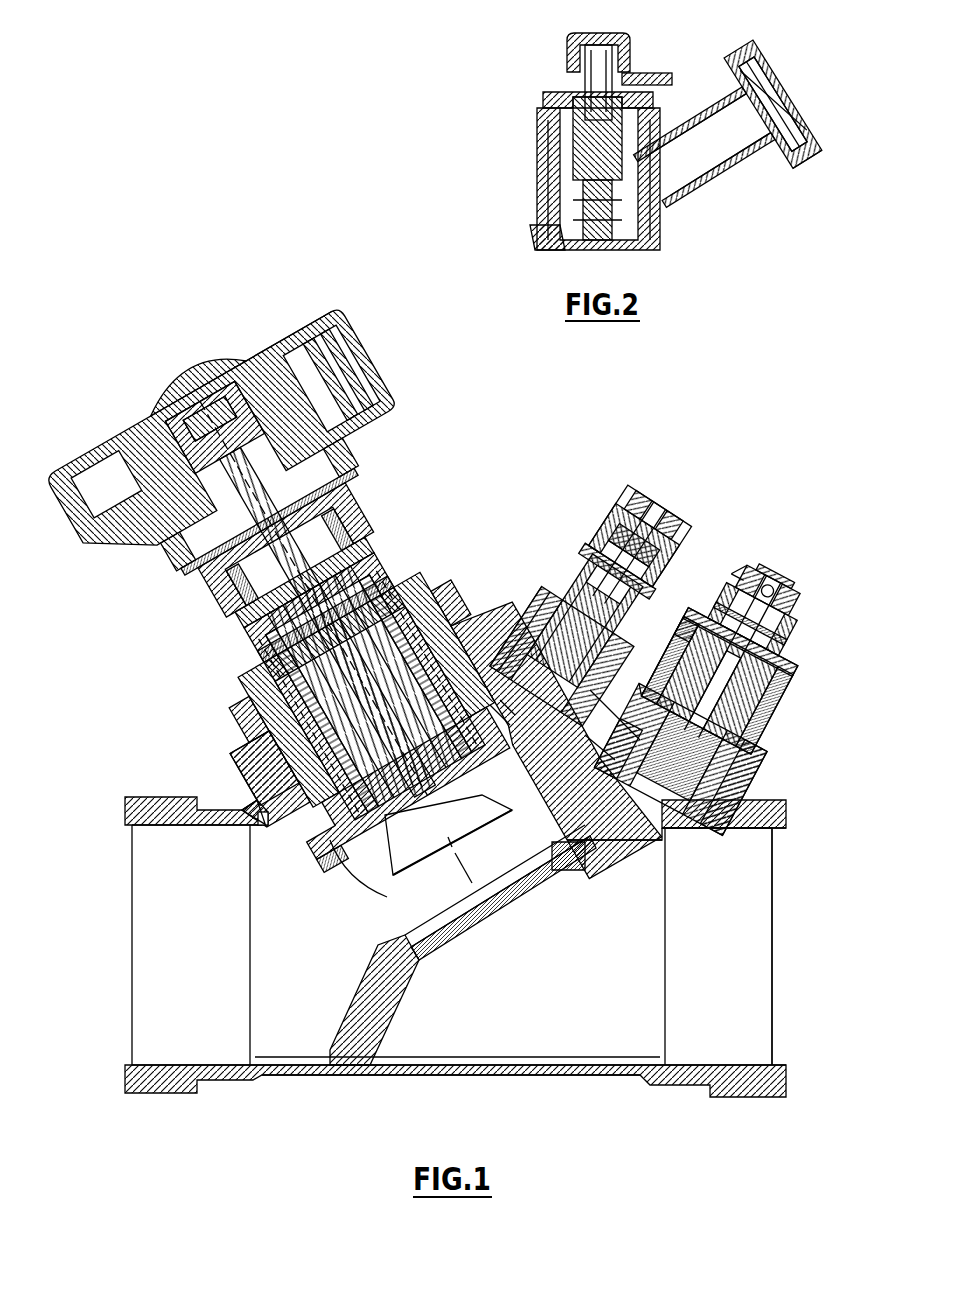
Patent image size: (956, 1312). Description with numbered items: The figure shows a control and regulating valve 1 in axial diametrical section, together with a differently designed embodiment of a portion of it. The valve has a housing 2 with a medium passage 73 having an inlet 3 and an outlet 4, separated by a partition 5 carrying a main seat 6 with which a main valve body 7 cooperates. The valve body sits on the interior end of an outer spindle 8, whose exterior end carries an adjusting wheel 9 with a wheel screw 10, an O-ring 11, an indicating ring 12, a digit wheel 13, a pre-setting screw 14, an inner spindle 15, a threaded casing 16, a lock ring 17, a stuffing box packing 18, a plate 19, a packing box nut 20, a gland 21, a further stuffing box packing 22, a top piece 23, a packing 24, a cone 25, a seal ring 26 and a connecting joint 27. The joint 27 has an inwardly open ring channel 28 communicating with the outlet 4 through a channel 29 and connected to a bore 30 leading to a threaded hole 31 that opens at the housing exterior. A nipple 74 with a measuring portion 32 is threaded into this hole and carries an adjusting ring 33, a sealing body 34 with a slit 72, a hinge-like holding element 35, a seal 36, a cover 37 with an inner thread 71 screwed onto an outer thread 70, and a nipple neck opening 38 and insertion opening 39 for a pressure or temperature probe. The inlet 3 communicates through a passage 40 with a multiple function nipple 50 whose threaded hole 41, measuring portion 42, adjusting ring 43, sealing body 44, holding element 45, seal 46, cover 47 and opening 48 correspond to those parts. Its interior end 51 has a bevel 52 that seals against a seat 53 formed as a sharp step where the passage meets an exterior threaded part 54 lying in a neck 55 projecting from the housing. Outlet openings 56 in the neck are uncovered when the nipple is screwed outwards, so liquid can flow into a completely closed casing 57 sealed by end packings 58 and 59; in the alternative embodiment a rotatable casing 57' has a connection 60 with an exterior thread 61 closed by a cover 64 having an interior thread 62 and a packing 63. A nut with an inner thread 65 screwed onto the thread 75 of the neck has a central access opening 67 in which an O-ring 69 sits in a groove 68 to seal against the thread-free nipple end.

In FIG. 1, the valve 1 is at (405, 1085).
In FIG. 1, the housing 2 is at (500, 1085).
In FIG. 1, the inlet 3 is at (745, 1045).
In FIG. 1, the outlet 4 is at (140, 985).
In FIG. 1, the partition 5 is at (365, 1000).
In FIG. 1, the main seat 6 is at (440, 935).
In FIG. 1, the main valve body 7 is at (385, 875).
In FIG. 1, the outer spindle 8 is at (355, 527).
In FIG. 1, the adjusting wheel 9 is at (80, 460).
In FIG. 1, the wheel screw 10 is at (197, 413).
In FIG. 1, the O-ring 11 is at (190, 385).
In FIG. 1, the indicating ring 12 is at (230, 385).
In FIG. 1, the digit wheel 13 is at (300, 330).
In FIG. 1, the pre-setting screw 14 is at (295, 467).
In FIG. 1, the inner spindle 15 is at (268, 503).
In FIG. 1, the threaded casing 16 is at (335, 545).
In FIG. 1, the lock ring 17 is at (360, 563).
In FIG. 1, the stuffing box packing 18 is at (245, 663).
In FIG. 1, the plate 19 is at (245, 706).
In FIG. 1, the packing box nut 20 is at (175, 555).
In FIG. 1, the gland 21 is at (192, 572).
In FIG. 1, the stuffing box packing 22 is at (215, 580).
In FIG. 1, the top piece 23 is at (225, 600).
In FIG. 1, the packing 24 is at (245, 750).
In FIG. 1, the cone 25 is at (330, 840).
In FIG. 1, the seal ring 26 is at (343, 845).
In FIG. 1, the connecting joint 27 is at (250, 785).
In FIG. 1, the ring channel 28 is at (470, 610).
In FIG. 1, the channel 29 is at (245, 848).
In FIG. 1, the bore 30 is at (500, 715).
In FIG. 1, the threaded hole 31 is at (530, 640).
In FIG. 1, the measuring portion 32 is at (590, 540).
In FIG. 1, the adjusting ring 33 is at (585, 615).
In FIG. 1, the sealing body 34 is at (580, 570).
In FIG. 1, the holding element 35 is at (640, 535).
In FIG. 1, the seal 36 is at (652, 530).
In FIG. 1, the cover 37 is at (640, 505).
In FIG. 1, the nipple neck opening 38 is at (640, 530).
In FIG. 1, the insertion opening 39 is at (615, 585).
In FIG. 1, the passage 40 is at (625, 840).
In FIG. 1, the threaded hole 41 is at (676, 819).
In FIG. 1, the measuring portion 42 is at (770, 745).
In FIG. 1, the adjusting ring 43 is at (740, 775).
In FIG. 1, the sealing body 44 is at (760, 740).
In FIG. 1, the holding element 45 is at (780, 650).
In FIG. 1, the seal 46 is at (780, 590).
In FIG. 1, the cover 47 is at (795, 615).
In FIG. 1, the nipple neck opening 48 is at (780, 630).
In FIG. 1, the multiple function nipple 50 is at (805, 548).
In FIG. 1, the interior end 51 is at (690, 830).
In FIG. 1, the bevel 52 is at (625, 775).
In FIG. 1, the seat 53 is at (620, 790).
In FIG. 1, the exterior threaded part 54 is at (750, 772).
In FIG. 2, the neck 55 is at (545, 240).
In FIG. 2, the outlet openings 56 is at (560, 188).
In FIG. 1, the casing 57 is at (600, 717).
In FIG. 2, the piston 57' is at (540, 168).
In FIG. 1, the end packing 58 is at (600, 745).
In FIG. 1, the end packing 59 is at (655, 640).
In FIG. 2, the connection 60 is at (700, 110).
In FIG. 2, the exterior thread 61 is at (785, 165).
In FIG. 2, the interior thread 62 is at (815, 145).
In FIG. 2, the packing 63 is at (745, 70).
In FIG. 2, the cover 64 is at (800, 112).
In FIG. 1, the inner thread 65 is at (690, 620).
In FIG. 1, the central access opening 67 is at (770, 590).
In FIG. 1, the groove 68 is at (718, 570).
In FIG. 1, the O-ring 69 is at (760, 600).
In FIG. 2, the outer thread 70 is at (575, 63).
In FIG. 2, the inner thread 71 is at (620, 45).
In FIG. 2, the slit 72 is at (548, 105).
In FIG. 1, the medium passage 73 is at (560, 1055).
In FIG. 1, the nipple 74 is at (695, 490).
In FIG. 1, the thread 75 is at (775, 700).